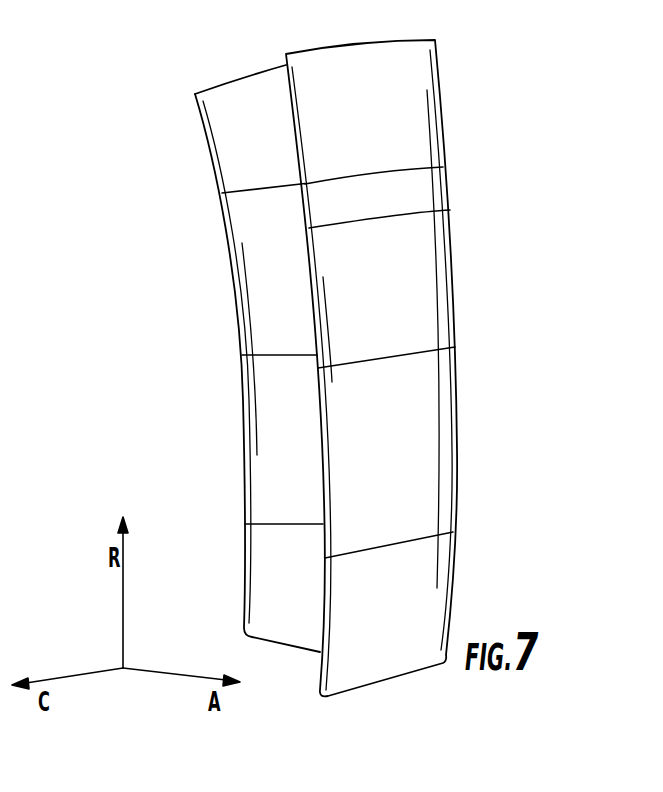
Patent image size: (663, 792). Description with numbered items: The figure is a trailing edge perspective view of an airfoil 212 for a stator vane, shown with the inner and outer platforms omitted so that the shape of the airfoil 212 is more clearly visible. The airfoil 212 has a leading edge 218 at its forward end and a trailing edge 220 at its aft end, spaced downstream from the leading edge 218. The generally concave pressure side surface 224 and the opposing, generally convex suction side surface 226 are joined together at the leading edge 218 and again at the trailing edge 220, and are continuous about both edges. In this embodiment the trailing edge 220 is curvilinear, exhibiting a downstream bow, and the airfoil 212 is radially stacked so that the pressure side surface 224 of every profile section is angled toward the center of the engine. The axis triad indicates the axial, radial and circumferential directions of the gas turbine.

The airfoil 212 is at (295, 368).
The leading edge 218 is at (235, 282).
The trailing edge 220 is at (450, 210).
The pressure side surface 224 is at (272, 143).
The suction side surface 226 is at (374, 125).